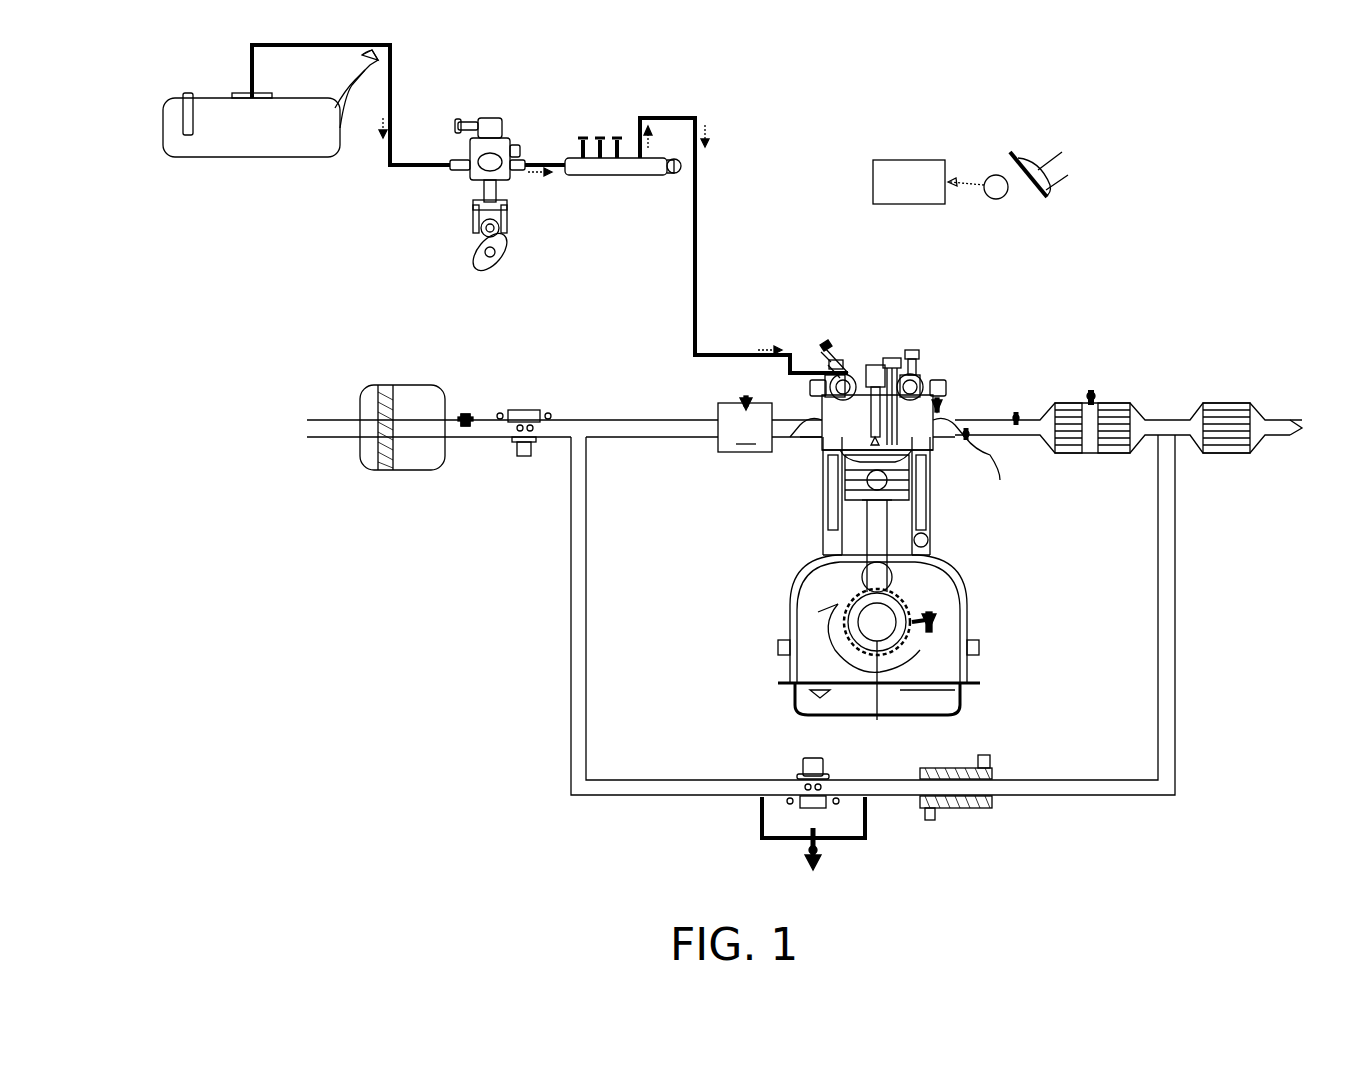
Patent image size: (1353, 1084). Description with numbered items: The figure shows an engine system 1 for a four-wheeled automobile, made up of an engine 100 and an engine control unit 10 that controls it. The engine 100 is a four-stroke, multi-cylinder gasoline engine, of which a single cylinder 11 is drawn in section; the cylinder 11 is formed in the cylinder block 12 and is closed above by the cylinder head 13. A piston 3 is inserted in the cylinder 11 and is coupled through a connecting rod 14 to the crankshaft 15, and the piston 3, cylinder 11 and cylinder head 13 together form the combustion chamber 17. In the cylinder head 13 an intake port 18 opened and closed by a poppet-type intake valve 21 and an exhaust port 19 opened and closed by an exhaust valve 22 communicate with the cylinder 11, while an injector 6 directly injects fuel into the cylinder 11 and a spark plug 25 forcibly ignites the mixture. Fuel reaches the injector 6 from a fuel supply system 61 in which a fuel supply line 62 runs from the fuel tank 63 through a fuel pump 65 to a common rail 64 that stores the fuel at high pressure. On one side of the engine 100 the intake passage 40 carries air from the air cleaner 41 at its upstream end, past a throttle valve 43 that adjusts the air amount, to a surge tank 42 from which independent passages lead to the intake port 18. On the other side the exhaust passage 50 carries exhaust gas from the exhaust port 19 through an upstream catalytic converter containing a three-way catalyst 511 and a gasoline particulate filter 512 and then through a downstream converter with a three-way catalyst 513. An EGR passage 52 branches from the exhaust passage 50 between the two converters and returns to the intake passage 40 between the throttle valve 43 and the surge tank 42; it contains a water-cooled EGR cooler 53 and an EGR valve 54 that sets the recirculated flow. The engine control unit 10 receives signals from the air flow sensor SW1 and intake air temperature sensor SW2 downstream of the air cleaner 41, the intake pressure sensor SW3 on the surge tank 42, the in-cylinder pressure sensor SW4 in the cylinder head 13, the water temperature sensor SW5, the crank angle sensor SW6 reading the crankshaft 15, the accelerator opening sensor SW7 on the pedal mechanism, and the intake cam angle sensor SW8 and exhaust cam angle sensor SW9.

The engine system 1 is at (1157, 143).
The engine 100 is at (1033, 330).
The ECU 10 is at (912, 204).
The piston 3 is at (845, 490).
The injector 6 is at (872, 365).
The cylinder 11 is at (823, 555).
The cylinder block 12 is at (940, 552).
The cylinder head 13 is at (940, 465).
The connecting rod 14 is at (845, 575).
The crankshaft 15 is at (877, 720).
The combustion chamber 17 is at (925, 520).
The intake port 18 is at (826, 440).
The exhaust port 19 is at (935, 440).
The intake valve 21 is at (840, 492).
The exhaust valve 22 is at (918, 485).
The spark plug 25 is at (845, 352).
The intake passage 40 is at (612, 437).
The air cleaner 41 is at (408, 470).
The surge tank 42 is at (745, 427).
The throttle valve 43 is at (523, 456).
The exhaust passage 50 is at (1040, 445).
The three-way catalyst 511 is at (1072, 453).
The GPF 512 is at (1113, 453).
The three-way catalyst 513 is at (1222, 453).
The EGR passage 52 is at (1115, 780).
The EGR cooler 53 is at (955, 768).
The EGR valve 54 is at (812, 758).
The fuel supply system 61 is at (395, 192).
The fuel supply line 62 is at (540, 162).
The fuel tank 63 is at (252, 157).
The common rail 64 is at (600, 170).
The fuel pump 65 is at (470, 176).
The air flow sensor SW1 is at (466, 414).
The intake air temperature sensor SW2 is at (466, 414).
The intake pressure sensor SW3 is at (740, 398).
The in-cylinder pressure sensor SW4 is at (892, 358).
The water temperature sensor SW5 is at (942, 406).
The crank angle sensor SW6 is at (936, 622).
The accelerator opening sensor SW7 is at (1000, 199).
The intake cam angle sensor SW8 is at (810, 386).
The exhaust cam angle sensor SW9 is at (946, 386).